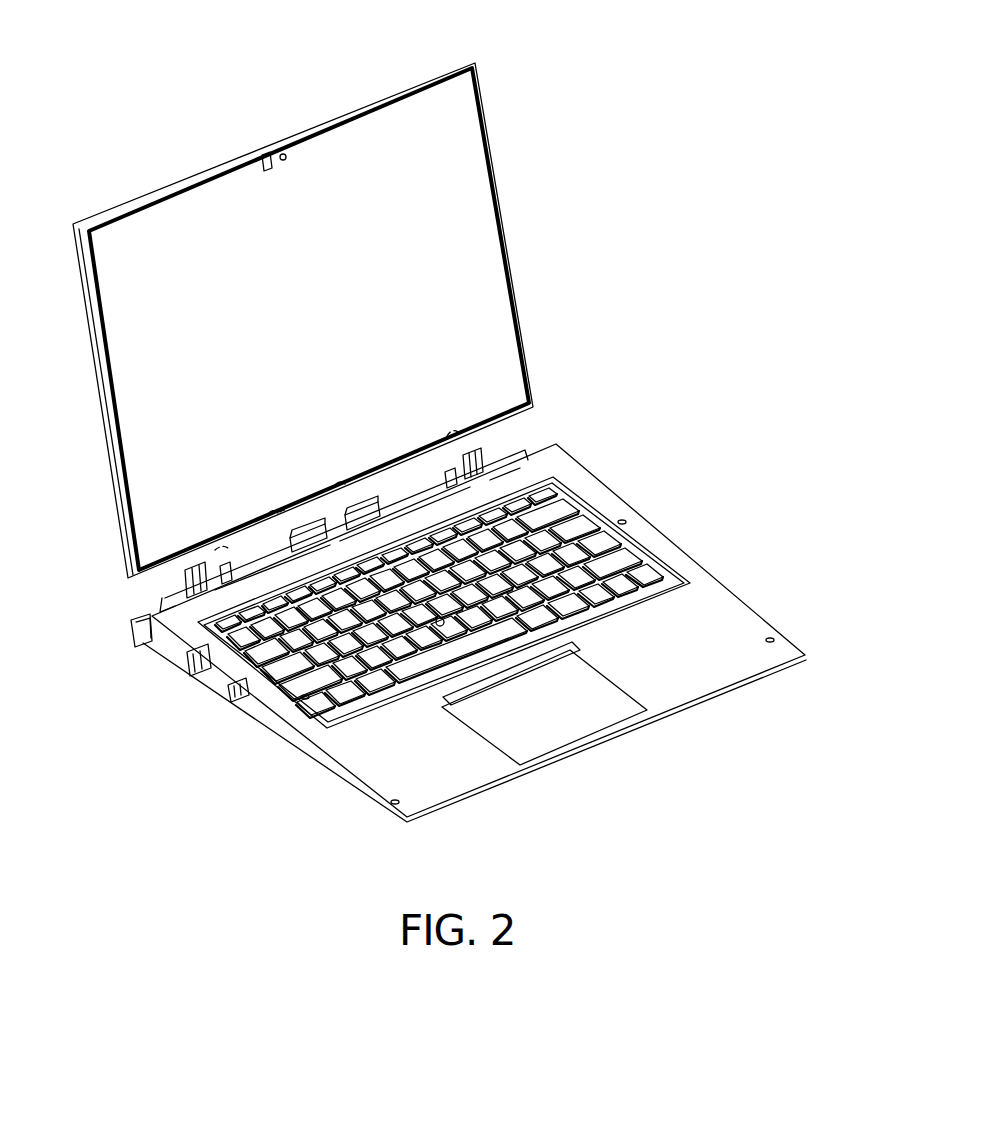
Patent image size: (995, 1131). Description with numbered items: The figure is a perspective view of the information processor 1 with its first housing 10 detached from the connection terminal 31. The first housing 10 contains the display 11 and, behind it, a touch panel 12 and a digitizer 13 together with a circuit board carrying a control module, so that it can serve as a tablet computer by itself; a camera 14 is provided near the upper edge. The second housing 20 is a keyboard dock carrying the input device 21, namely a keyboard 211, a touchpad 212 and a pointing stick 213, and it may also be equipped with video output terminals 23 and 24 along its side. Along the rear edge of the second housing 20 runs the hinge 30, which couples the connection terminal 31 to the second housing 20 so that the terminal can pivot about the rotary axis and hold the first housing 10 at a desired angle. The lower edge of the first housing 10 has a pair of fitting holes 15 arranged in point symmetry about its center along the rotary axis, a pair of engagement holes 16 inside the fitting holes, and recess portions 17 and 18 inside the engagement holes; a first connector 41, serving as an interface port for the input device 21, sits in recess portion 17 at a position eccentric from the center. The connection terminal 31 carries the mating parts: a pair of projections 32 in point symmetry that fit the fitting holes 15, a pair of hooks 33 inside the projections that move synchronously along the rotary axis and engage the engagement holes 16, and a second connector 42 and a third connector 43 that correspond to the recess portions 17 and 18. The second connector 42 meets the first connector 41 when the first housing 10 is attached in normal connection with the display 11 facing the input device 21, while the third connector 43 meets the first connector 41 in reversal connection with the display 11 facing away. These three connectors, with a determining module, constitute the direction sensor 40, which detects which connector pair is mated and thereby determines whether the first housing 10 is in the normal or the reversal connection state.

The information processor 1 is at (447, 419).
The first housing 10 is at (327, 297).
The display 11 is at (338, 308).
The touch panel 12 is at (338, 321).
The digitizer 13 is at (470, 172).
The camera 14 is at (265, 154).
The fitting holes 15 is at (463, 432).
The engagement holes 16 is at (437, 445).
The recess portion 17 is at (283, 515).
The recess portion 18 is at (340, 482).
The second housing 20 is at (451, 568).
The input device 21 is at (657, 546).
The video output terminal 23 is at (190, 665).
The video output terminal 24 is at (235, 695).
The hinge 30 is at (331, 535).
The connection terminal 31 is at (140, 638).
The projections 32 is at (482, 452).
The hooks 33 is at (232, 566).
The direction sensor 40 is at (305, 433).
The first connector 41 is at (272, 510).
The second connector 42 is at (306, 535).
The third connector 43 is at (365, 508).
The keyboard 211 is at (572, 502).
The touchpad 212 is at (566, 716).
The pointing stick 213 is at (438, 627).